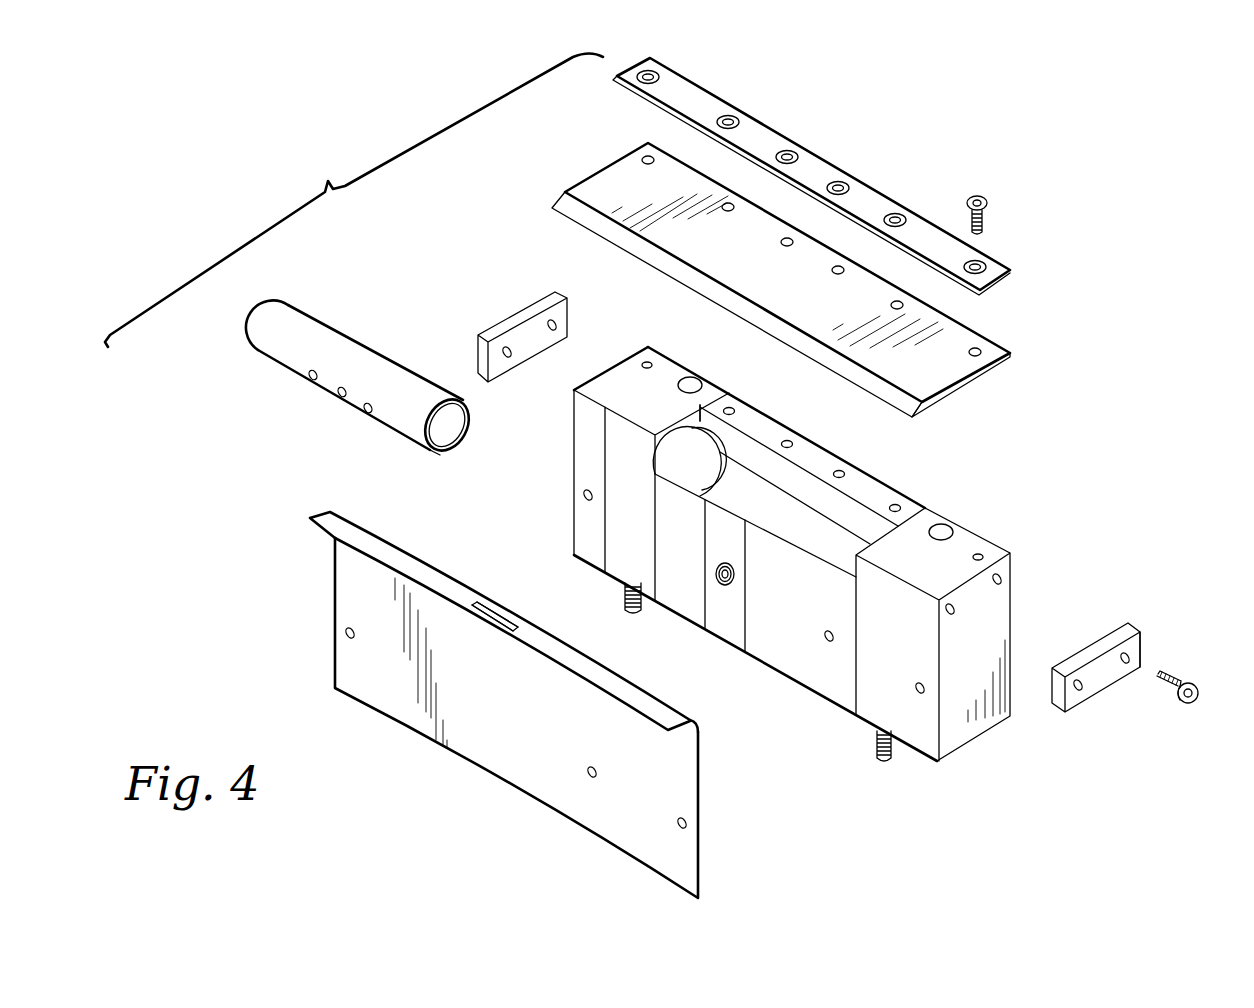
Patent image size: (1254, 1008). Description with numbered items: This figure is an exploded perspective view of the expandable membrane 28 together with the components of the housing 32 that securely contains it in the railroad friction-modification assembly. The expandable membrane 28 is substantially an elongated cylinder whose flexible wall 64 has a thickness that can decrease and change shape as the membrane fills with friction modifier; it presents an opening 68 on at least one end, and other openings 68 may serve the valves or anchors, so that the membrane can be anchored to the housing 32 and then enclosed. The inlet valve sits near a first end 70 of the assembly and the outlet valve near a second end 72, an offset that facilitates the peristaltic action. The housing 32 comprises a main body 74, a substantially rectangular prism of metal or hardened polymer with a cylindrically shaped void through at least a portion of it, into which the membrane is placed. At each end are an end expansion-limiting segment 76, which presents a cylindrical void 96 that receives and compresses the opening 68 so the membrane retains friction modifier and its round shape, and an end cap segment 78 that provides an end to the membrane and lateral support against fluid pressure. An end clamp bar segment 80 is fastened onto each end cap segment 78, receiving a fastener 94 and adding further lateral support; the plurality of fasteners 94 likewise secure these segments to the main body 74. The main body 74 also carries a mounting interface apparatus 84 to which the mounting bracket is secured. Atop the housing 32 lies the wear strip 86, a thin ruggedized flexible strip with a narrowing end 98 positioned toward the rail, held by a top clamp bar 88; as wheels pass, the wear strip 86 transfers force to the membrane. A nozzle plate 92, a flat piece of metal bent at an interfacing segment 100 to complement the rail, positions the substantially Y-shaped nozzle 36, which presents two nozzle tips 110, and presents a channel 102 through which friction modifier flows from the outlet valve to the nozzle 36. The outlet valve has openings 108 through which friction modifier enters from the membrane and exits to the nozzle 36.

The expandable membrane 28 is at (362, 355).
The housing 32 is at (1135, 210).
The nozzle 36 is at (496, 598).
The wall 64 is at (447, 453).
The opening 68 is at (238, 332).
The first end 70 is at (1149, 561).
The second end 72 is at (500, 258).
The main body 74 is at (828, 460).
The end expansion-limiting segment 76 is at (663, 397).
The end cap segment 78 is at (614, 379).
The end clamp bar segment 80 is at (528, 345).
The mounting interface apparatus 84 is at (620, 597).
The wear strip 86 is at (975, 338).
The top clamp bar 88 is at (755, 135).
The nozzle plate 92 is at (372, 683).
The fasteners 94 is at (987, 200).
The cylindrical void 96 is at (688, 458).
The narrowing end 98 is at (900, 400).
The interfacing segment 100 is at (320, 540).
The channel 102 is at (523, 606).
The openings 108 is at (717, 583).
The nozzle tip 110 is at (510, 628).